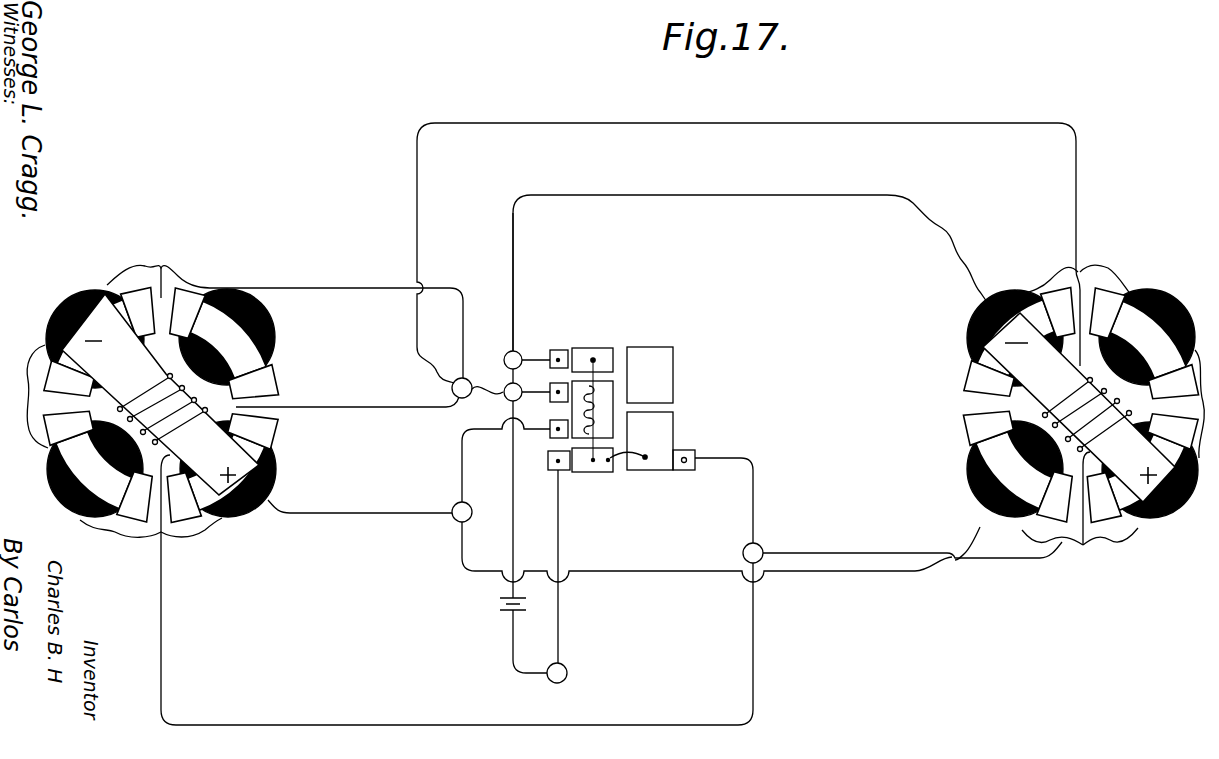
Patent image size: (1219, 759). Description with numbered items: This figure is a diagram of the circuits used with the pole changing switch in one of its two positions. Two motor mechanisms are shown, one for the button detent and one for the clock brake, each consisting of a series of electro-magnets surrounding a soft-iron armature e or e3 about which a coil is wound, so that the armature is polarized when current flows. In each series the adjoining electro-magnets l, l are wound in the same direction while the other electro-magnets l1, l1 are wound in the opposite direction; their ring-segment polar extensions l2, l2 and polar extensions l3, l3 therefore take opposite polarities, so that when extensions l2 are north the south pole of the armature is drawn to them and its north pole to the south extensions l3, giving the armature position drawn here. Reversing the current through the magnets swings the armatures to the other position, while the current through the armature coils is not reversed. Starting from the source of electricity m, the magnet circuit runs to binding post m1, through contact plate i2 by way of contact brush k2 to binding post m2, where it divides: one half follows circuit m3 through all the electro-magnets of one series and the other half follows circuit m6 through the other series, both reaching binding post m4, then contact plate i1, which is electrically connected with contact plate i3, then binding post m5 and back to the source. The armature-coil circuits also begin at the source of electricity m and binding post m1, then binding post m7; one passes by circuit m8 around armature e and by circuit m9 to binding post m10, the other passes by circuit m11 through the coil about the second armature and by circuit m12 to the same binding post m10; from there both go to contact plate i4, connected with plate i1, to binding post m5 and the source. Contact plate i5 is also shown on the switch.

The electro-magnet l is at (46, 342).
The electro-magnet l1 is at (272, 324).
The polar extension l2 is at (558, 404).
The polar extension l3 is at (682, 405).
The armature e is at (160, 394).
The armature e3 is at (1079, 407).
The source of electricity m is at (523, 632).
The binding post m1 is at (506, 386).
The binding post m2 is at (466, 513).
The circuit m3 is at (707, 552).
The binding post m4 is at (519, 355).
The binding post m5 is at (568, 673).
The circuit m6 is at (360, 501).
The binding post m7 is at (466, 399).
The circuit m8 is at (339, 347).
The circuit m9 is at (457, 632).
The binding post m10 is at (758, 549).
The circuit m11 is at (770, 241).
The circuit m12 is at (912, 543).
The contact plate i1 is at (592, 474).
The contact plate i2 is at (592, 410).
The contact plate i3 is at (600, 355).
The contact plate i4 is at (661, 441).
The contact plate i5 is at (650, 375).
The contact brush k2 is at (546, 410).